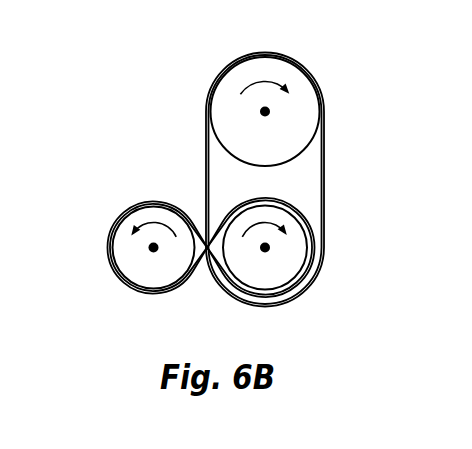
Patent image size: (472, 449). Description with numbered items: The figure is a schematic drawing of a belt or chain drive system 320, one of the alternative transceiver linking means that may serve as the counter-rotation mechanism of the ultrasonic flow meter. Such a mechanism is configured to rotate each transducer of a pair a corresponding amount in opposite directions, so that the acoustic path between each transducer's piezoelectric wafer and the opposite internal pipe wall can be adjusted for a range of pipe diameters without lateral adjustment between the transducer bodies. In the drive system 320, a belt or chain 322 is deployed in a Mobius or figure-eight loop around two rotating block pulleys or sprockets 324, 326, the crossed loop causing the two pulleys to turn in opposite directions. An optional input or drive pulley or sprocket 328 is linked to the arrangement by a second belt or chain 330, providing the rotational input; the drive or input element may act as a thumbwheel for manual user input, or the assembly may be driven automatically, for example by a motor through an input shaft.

The belt drive system 320 is at (166, 68).
The belt or chain 322 is at (207, 263).
The rotating block pulley or sprocket 324 is at (282, 265).
The rotating block pulley or sprocket 326 is at (137, 261).
The input or drive pulley or sprocket 328 is at (300, 103).
The belt or chain 330 is at (324, 185).